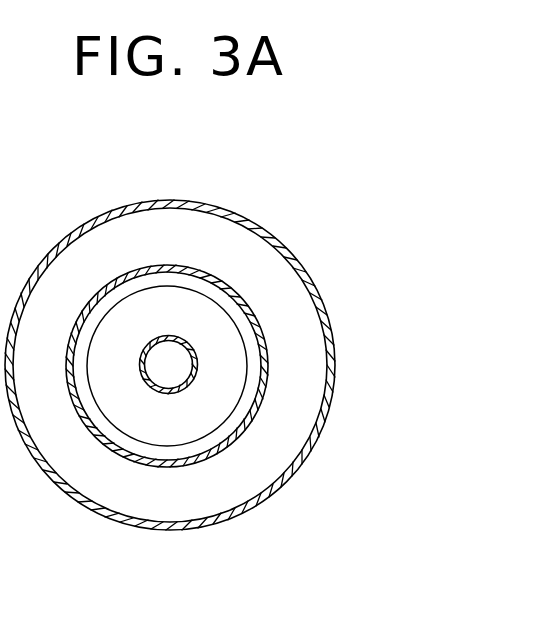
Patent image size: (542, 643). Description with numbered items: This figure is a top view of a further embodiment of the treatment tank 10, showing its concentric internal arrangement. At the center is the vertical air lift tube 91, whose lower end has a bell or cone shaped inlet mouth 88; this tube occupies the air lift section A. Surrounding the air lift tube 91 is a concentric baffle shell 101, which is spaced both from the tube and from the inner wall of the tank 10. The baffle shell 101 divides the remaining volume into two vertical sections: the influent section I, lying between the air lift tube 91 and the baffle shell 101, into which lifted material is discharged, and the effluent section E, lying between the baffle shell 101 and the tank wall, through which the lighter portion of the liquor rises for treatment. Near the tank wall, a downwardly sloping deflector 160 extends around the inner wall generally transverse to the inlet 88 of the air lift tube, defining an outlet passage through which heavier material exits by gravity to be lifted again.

The tank 10 is at (249, 214).
The baffle shell 101 is at (133, 270).
The inlet mouth 88 is at (173, 442).
The air lift tube 91 is at (154, 389).
The air lift section A is at (159, 370).
The effluent section E is at (280, 299).
The influent section I is at (222, 392).
The deflector 160 is at (214, 496).